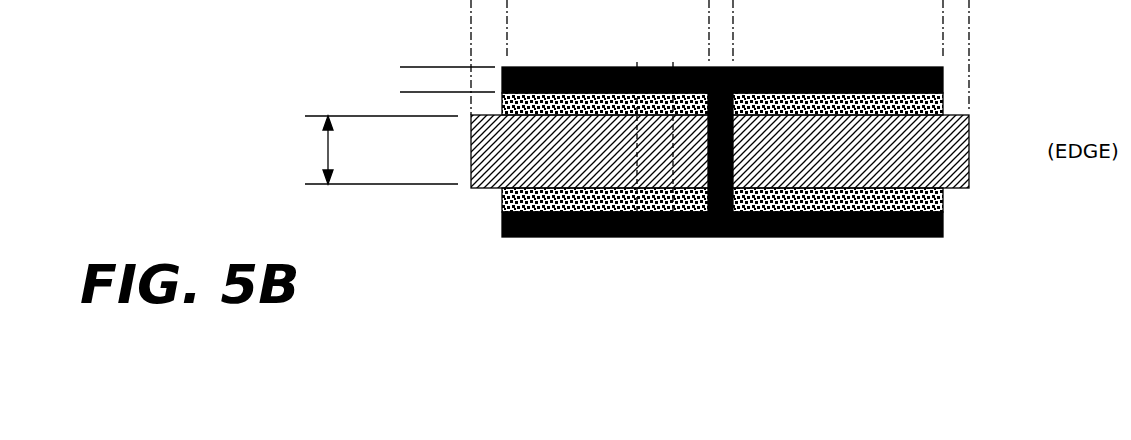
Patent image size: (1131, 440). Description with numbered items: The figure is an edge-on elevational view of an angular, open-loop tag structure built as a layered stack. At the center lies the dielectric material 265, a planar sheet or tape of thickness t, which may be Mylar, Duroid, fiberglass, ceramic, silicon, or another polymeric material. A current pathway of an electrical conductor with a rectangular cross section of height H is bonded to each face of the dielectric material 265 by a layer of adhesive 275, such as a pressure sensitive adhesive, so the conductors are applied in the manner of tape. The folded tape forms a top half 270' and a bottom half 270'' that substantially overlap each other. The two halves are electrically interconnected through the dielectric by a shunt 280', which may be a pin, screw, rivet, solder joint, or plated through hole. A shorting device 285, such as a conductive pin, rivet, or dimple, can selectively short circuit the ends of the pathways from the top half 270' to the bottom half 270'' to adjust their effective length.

The dielectric material 265 is at (466, 137).
The top half 270' is at (796, 49).
The bottom half 270'' is at (796, 250).
The adhesive 275 is at (943, 110).
The shunt 280' is at (786, 196).
The shorting device 285 is at (632, 157).
The height H is at (395, 77).
The thickness t is at (322, 140).